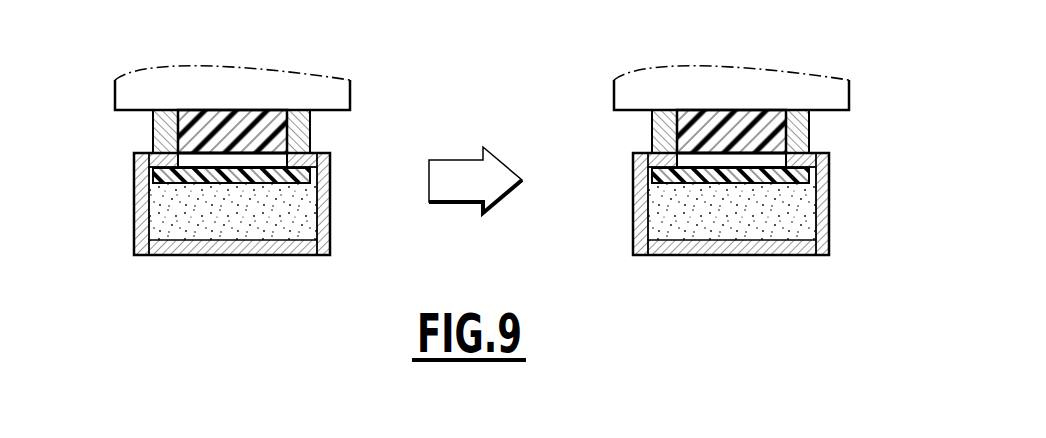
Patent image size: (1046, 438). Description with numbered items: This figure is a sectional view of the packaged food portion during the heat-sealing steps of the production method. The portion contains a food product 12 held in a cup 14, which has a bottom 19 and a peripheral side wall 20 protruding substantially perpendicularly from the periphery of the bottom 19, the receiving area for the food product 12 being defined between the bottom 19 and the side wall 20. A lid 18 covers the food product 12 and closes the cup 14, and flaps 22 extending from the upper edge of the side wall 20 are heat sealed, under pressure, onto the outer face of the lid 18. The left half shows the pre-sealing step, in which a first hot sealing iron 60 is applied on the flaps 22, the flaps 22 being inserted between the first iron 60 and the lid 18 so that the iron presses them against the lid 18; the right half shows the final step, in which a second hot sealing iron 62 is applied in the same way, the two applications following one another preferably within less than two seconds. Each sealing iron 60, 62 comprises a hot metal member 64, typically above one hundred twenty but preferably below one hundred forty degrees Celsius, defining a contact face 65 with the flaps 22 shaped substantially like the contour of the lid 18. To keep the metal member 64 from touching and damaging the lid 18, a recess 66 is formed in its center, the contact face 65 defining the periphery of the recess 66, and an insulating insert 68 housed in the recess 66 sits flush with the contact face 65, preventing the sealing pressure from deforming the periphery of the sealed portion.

The food product 12 is at (225, 218).
The cup 14 is at (126, 215).
The lid 18 is at (203, 185).
The bottom 19 is at (280, 250).
The peripheral side wall 20 is at (332, 205).
The flaps 22 is at (304, 159).
The first hot sealing iron 60 is at (136, 132).
The second hot sealing iron 62 is at (810, 92).
The hot metal member 64 is at (312, 128).
The contact face 65 is at (150, 166).
The recess 66 is at (268, 125).
The insulating insert 68 is at (225, 130).